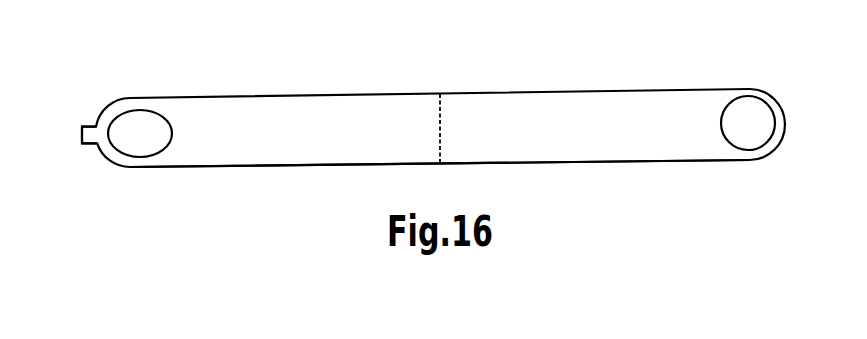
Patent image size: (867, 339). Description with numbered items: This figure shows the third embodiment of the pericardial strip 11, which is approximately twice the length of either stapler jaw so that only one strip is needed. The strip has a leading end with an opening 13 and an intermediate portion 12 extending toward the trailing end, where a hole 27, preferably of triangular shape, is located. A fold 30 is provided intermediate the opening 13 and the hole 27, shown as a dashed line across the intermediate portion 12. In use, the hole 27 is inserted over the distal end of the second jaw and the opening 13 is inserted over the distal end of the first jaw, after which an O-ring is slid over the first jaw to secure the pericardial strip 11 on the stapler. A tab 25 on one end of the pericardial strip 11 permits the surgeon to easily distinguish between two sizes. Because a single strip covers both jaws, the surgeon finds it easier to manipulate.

The pericardial strip 11 is at (610, 196).
The intermediate portion 12 is at (359, 167).
The opening 13 is at (749, 127).
The tab 25 is at (82, 133).
The hole 27 is at (135, 137).
The fold 30 is at (442, 127).